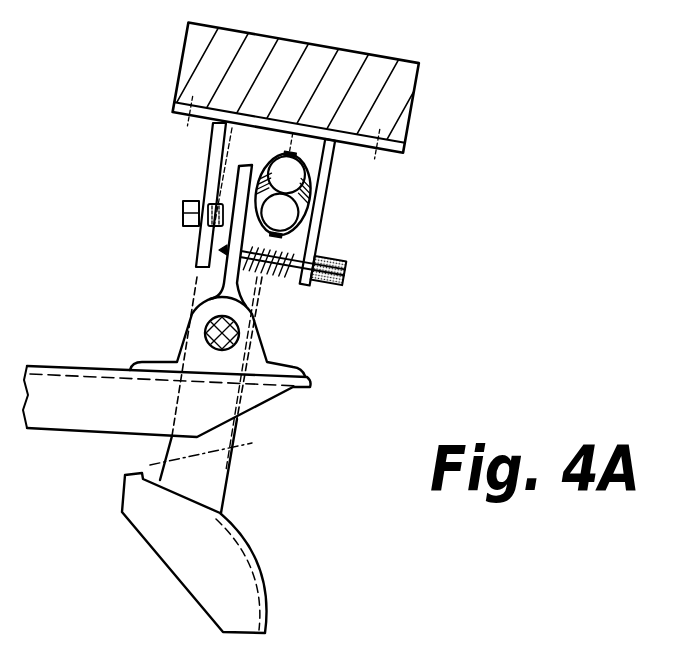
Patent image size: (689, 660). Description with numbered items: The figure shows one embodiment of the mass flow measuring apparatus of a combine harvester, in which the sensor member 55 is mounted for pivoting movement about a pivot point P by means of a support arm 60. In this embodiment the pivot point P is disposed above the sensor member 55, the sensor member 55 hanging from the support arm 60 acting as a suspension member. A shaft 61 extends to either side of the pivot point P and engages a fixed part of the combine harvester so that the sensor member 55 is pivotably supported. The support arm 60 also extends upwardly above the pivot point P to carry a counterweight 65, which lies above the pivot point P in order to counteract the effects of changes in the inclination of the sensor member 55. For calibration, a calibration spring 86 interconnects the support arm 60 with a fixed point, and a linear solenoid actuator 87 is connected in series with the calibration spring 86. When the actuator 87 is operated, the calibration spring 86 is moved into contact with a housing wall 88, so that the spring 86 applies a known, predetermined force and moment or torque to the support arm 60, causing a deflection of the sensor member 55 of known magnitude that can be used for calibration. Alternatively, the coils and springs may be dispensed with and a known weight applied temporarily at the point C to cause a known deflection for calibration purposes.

The counterweight 65 is at (415, 90).
The calibration spring 86 is at (226, 249).
The linear solenoid actuator 87 is at (342, 265).
The housing wall 88 is at (305, 227).
The pivot point P is at (215, 328).
The shaft 61 is at (205, 342).
The support arm 60 is at (167, 445).
The point C is at (143, 474).
The sensor member 55 is at (262, 570).